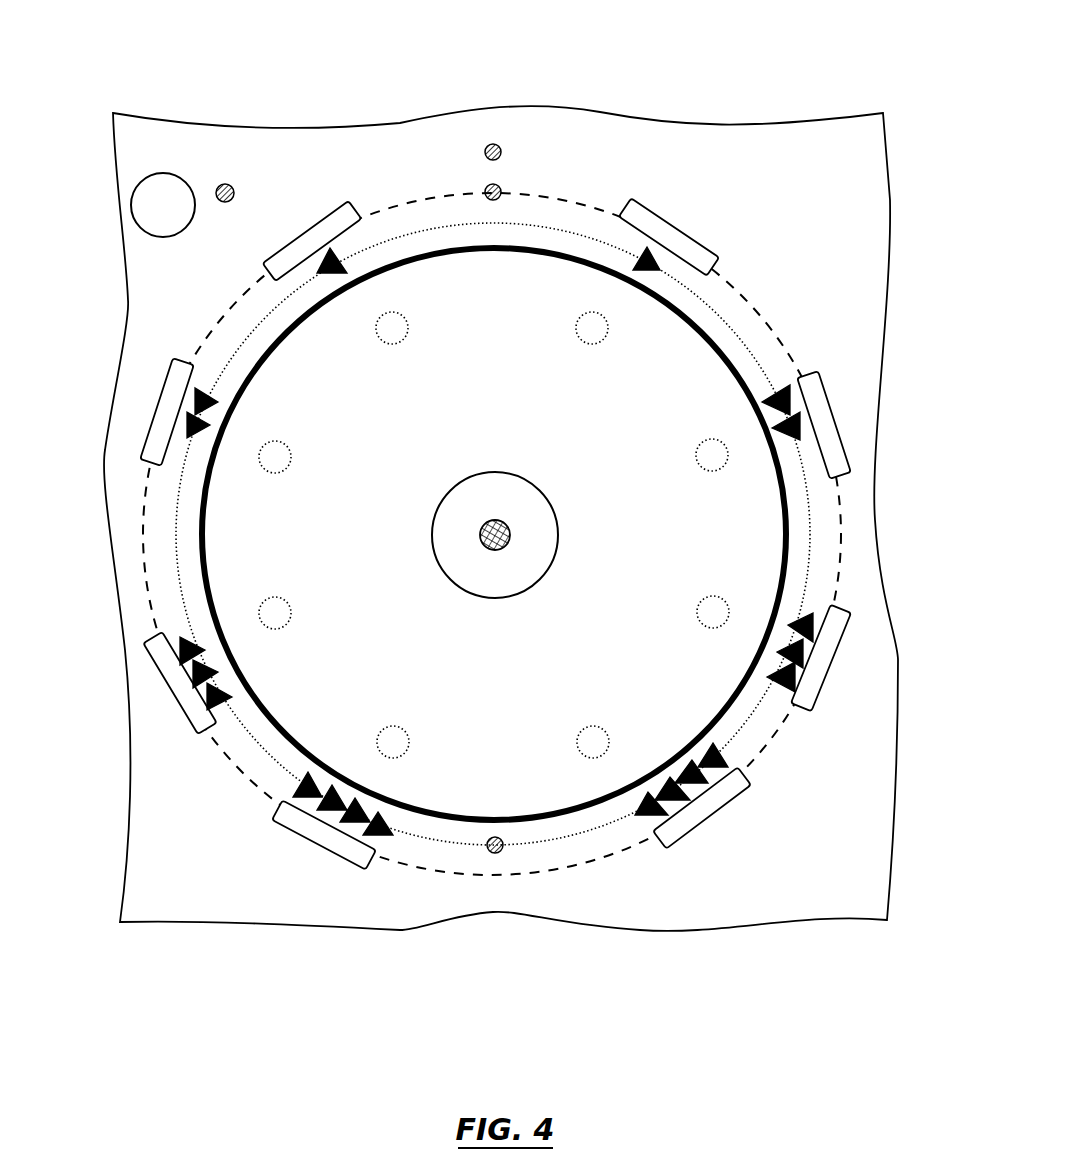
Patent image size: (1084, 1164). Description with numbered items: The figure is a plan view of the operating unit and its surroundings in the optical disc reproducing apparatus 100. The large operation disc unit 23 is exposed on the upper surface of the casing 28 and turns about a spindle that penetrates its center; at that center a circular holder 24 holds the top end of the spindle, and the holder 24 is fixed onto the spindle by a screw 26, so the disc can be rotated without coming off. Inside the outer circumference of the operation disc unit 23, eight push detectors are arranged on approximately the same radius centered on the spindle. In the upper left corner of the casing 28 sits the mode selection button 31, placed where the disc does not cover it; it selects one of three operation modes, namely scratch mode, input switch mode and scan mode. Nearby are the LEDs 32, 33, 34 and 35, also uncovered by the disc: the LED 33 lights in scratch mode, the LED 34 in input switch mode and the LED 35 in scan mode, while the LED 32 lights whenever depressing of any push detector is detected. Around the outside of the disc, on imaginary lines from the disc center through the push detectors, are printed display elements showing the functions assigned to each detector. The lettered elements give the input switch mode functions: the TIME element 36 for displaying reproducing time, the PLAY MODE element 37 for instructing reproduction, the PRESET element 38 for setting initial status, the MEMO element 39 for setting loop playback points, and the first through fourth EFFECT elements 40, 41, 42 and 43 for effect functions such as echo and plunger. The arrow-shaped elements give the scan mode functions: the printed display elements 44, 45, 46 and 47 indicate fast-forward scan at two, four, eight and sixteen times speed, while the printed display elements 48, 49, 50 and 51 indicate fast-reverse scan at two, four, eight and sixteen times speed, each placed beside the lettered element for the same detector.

The optical disc reproducing apparatus 100 is at (770, 92).
The operation disc unit 23 is at (697, 373).
The holder 24 is at (537, 550).
The screw 26 is at (506, 525).
The casing 28 is at (266, 915).
The mode selection button 31 is at (138, 218).
The LED 32 is at (493, 143).
The LED 33 is at (223, 183).
The LED 34 is at (500, 185).
The LED 35 is at (495, 853).
The printed display element "TIME" 36 is at (670, 218).
The printed display element "PLAY MODE" 37 is at (838, 440).
The printed display element "PRESET" 38 is at (845, 670).
The printed display element "MEMO" 39 is at (690, 850).
The printed display element "EFFECT 1" 40 is at (313, 223).
The printed display element "EFFECT 2" 41 is at (140, 435).
The printed display element "EFFECT 3" 42 is at (150, 667).
The printed display element "EFFECT 4" 43 is at (284, 822).
The printed display element 44 is at (633, 247).
The printed display element 45 is at (790, 385).
The printed display element 46 is at (818, 605).
The printed display element 47 is at (735, 748).
The printed display element 48 is at (340, 258).
The printed display element 49 is at (215, 398).
The printed display element 50 is at (190, 648).
The printed display element 51 is at (300, 782).